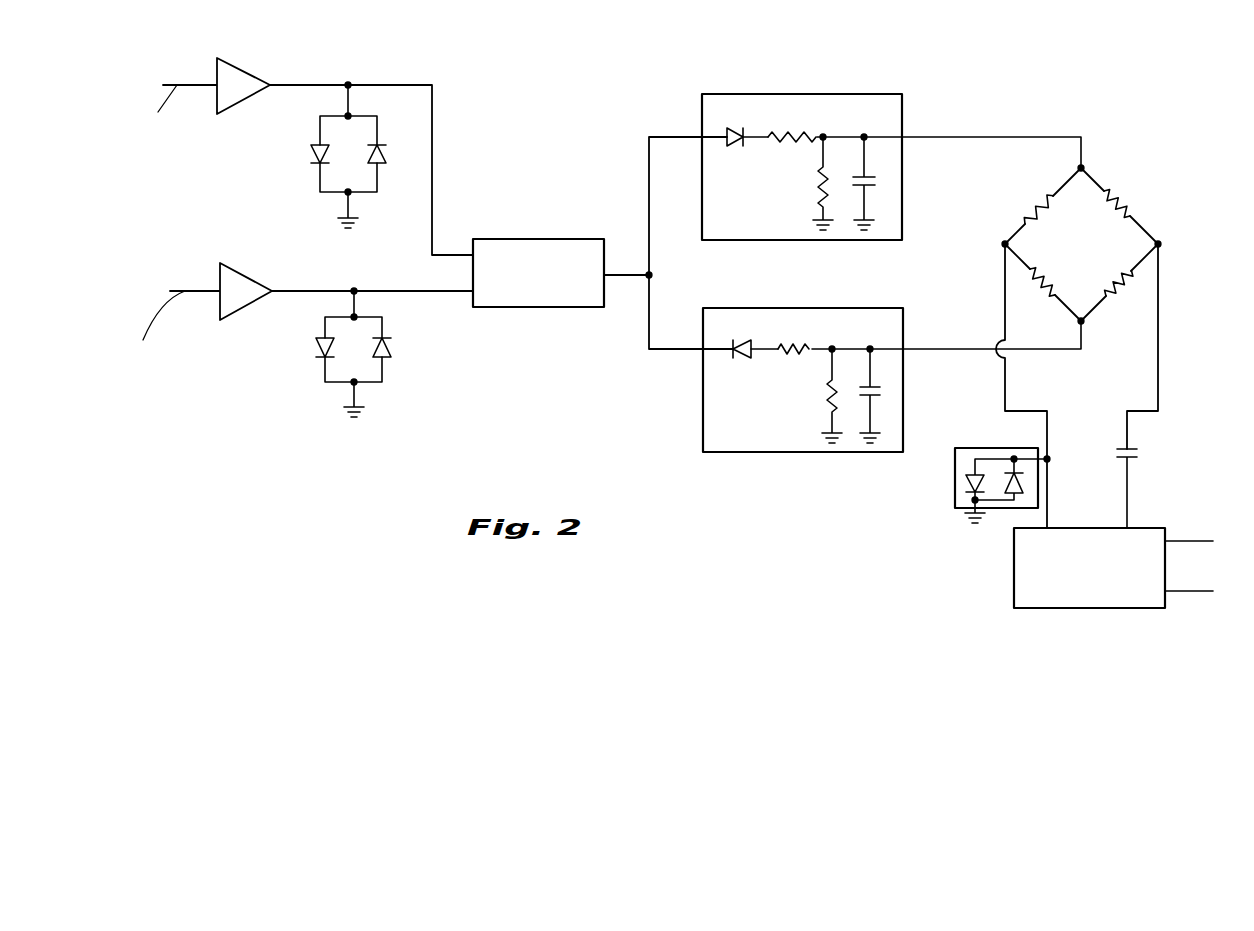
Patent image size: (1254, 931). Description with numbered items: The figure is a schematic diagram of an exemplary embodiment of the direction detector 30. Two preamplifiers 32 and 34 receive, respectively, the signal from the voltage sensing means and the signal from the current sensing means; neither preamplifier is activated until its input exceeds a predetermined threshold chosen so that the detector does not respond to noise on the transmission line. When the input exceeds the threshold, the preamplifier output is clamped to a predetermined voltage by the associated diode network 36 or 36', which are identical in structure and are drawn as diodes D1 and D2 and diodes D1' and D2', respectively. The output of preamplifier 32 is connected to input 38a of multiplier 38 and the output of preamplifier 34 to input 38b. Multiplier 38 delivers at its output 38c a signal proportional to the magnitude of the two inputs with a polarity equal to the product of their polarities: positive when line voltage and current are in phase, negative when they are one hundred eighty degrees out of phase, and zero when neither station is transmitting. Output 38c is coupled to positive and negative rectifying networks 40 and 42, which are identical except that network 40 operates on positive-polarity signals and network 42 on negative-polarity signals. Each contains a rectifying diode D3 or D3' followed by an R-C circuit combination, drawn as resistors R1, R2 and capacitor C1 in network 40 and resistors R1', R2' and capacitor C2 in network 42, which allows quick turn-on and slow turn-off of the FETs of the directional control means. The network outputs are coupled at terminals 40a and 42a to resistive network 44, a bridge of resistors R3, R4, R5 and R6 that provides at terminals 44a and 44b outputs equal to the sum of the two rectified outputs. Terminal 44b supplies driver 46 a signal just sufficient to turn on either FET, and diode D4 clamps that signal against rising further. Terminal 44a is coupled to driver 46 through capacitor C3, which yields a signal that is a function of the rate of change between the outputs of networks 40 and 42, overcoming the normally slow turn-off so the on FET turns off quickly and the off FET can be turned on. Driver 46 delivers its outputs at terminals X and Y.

The direction detector 30 is at (516, 192).
The first preamplifier 32 is at (237, 78).
The second preamplifier 34 is at (242, 283).
The diode network 36 is at (336, 156).
The diode network 36' is at (350, 354).
The multiplier 38 is at (530, 247).
The multiplier input 38a is at (348, 85).
The multiplier input 38b is at (354, 291).
The multiplier output 38c is at (649, 275).
The positive rectifying network 40 is at (891, 133).
The terminal 40a is at (1081, 168).
The negative rectifying network 42 is at (892, 358).
The terminal 42a is at (1081, 321).
The resistive network 44 is at (1081, 327).
The output terminal 44a is at (1158, 244).
The output terminal 44b is at (1005, 244).
The driver 46 is at (1085, 608).
The diode D1 is at (291, 170).
The diode D2 is at (394, 171).
The diode D1' is at (293, 362).
The diode D2' is at (410, 363).
The diode D3 is at (737, 163).
The diode D3' is at (740, 371).
The diode D4 is at (955, 485).
The resistor R1 is at (805, 120).
The resistor R2 is at (804, 183).
The resistor R1' is at (808, 332).
The resistor R2' is at (811, 396).
The resistor R3 is at (1027, 218).
The resistor R4 is at (1122, 200).
The resistor R5 is at (1045, 290).
The resistor R6 is at (1113, 292).
The capacitor C1 is at (878, 181).
The capacitor C2 is at (880, 390).
The capacitor C3 is at (1140, 452).
The output terminal X is at (1199, 541).
The output terminal Y is at (1199, 591).